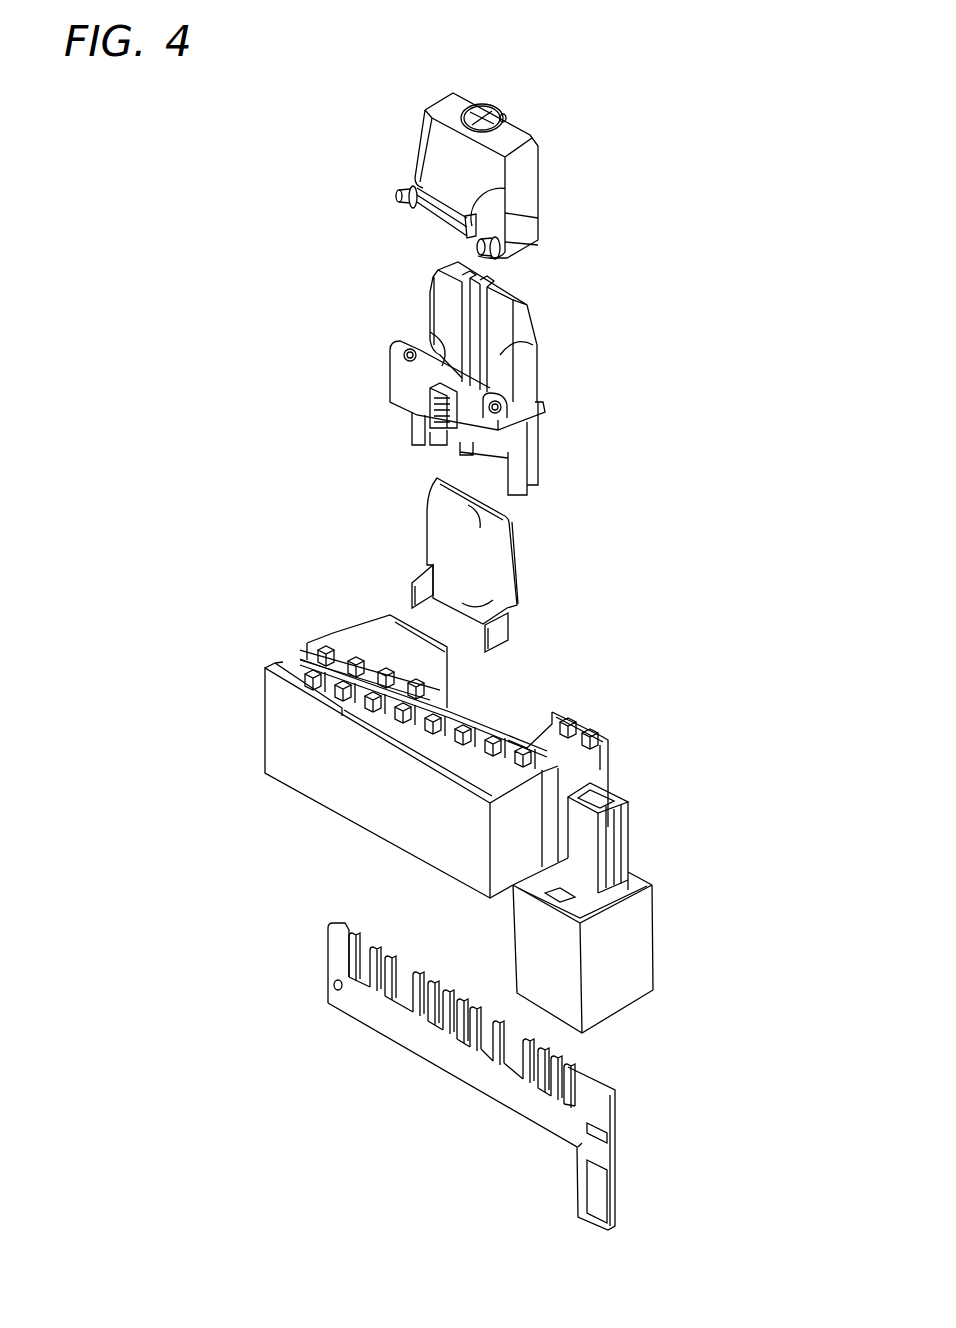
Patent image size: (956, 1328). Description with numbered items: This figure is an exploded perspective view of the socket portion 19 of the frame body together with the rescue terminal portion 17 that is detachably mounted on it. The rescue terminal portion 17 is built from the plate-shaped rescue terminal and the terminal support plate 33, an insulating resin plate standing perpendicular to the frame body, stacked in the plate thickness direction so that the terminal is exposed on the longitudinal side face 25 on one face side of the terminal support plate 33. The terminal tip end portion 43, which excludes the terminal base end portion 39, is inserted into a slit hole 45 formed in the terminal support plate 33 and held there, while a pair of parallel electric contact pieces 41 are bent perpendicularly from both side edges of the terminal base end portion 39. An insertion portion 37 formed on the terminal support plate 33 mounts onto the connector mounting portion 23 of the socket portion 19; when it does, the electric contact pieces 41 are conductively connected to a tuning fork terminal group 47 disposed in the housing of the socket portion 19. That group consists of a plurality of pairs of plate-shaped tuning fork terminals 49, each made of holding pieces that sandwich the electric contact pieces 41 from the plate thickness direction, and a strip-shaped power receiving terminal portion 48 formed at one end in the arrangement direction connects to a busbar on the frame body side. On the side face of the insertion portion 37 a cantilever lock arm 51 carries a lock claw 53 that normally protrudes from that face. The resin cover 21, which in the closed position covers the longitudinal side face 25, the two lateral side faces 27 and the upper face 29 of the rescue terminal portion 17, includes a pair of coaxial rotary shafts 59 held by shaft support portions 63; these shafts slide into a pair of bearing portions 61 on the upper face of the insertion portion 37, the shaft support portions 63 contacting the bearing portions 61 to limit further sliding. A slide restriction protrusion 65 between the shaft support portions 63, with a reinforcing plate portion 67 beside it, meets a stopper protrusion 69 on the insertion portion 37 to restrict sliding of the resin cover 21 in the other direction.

The rescue terminal portion 17 is at (502, 374).
The socket portion 19 is at (424, 824).
The resin cover 21 is at (414, 122).
The connector mounting portion 23 is at (496, 709).
The longitudinal side face 25 is at (472, 569).
The lateral side faces 27 is at (530, 366).
The upper face 29 is at (455, 265).
The terminal support plate 33 is at (510, 296).
The insertion portion 37 is at (400, 384).
The terminal base end portion 39 is at (472, 604).
The electric contact pieces 41 is at (410, 592).
The terminal tip end portion 43 is at (478, 514).
The slit hole 45 is at (443, 347).
The tuning fork terminal group 47 is at (464, 1060).
The power receiving terminal portion 48 is at (596, 1202).
The tuning fork terminals 49 is at (395, 956).
The lock arm 51 is at (432, 400).
The lock claw 53 is at (440, 418).
The rotary shafts 59 is at (398, 194).
The bearing portions 61 is at (405, 352).
The shaft support portion 63 is at (412, 203).
The slide restriction protrusion 65 is at (474, 214).
The reinforcing plate portion 67 is at (414, 190).
The stopper protrusion 69 is at (513, 345).